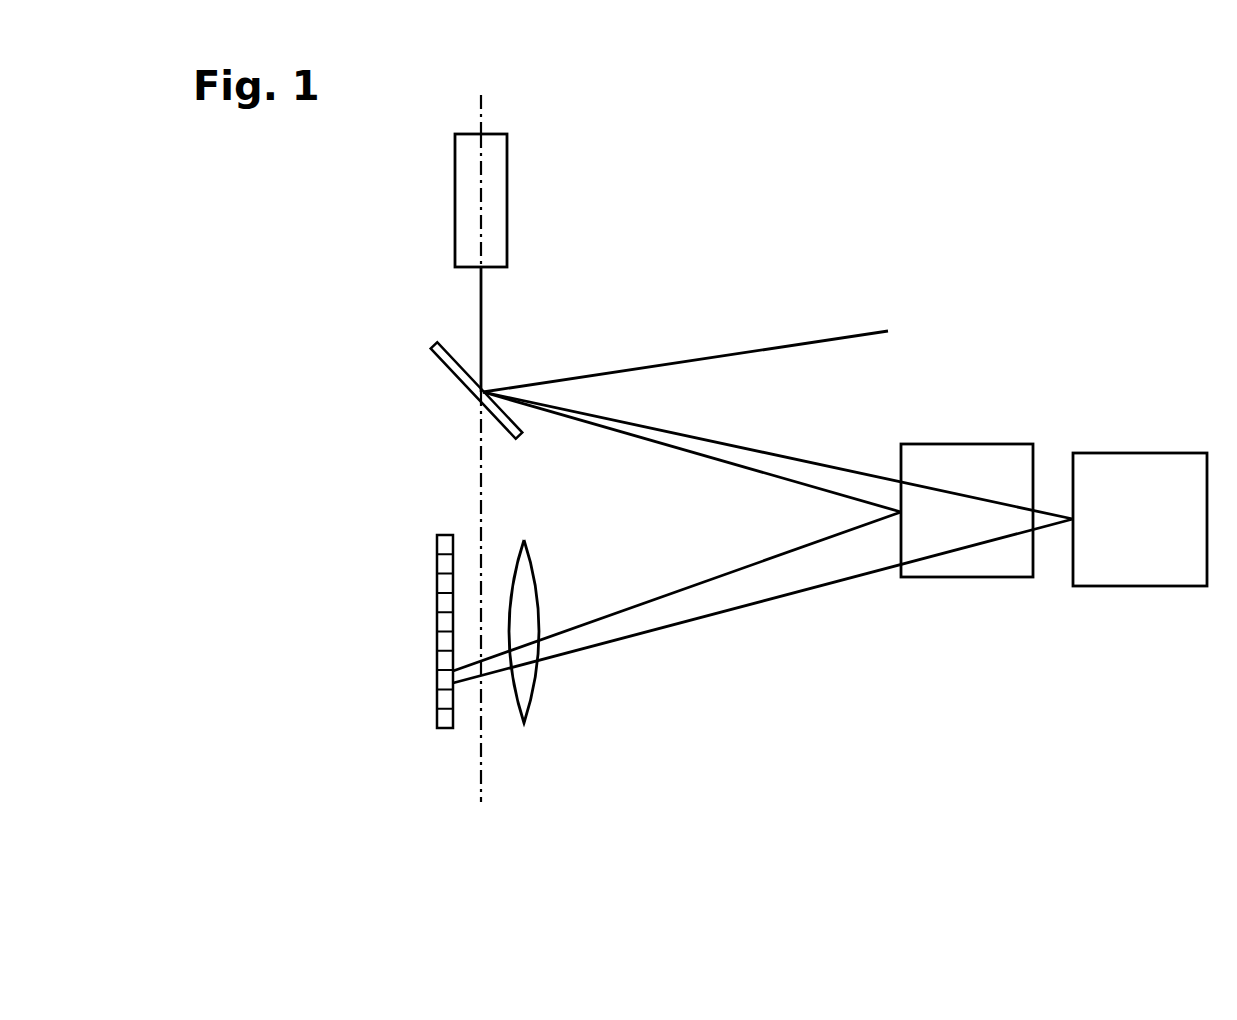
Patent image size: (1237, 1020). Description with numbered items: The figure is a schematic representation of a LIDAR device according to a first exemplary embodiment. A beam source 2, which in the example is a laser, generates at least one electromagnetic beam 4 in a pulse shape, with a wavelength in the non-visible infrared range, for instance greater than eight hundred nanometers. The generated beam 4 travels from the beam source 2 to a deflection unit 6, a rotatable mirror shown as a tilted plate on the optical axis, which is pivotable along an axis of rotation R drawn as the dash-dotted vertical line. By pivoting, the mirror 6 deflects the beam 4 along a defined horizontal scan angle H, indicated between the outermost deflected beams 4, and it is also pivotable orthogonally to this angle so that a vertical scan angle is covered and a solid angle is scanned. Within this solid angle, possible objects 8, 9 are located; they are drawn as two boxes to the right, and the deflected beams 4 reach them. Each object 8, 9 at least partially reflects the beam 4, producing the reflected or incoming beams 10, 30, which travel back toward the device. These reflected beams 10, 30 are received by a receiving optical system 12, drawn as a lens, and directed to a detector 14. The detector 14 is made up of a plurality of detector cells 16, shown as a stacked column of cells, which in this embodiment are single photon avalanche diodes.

The beam source 2 is at (455, 197).
The electromagnetic beam 4 is at (481, 306).
The deflection unit 6 is at (460, 380).
The object 8 is at (967, 444).
The object 9 is at (1141, 453).
The reflected beam 10 is at (722, 575).
The receiving optical system 12 is at (538, 697).
The detector 14 is at (360, 736).
The detector cells 16 is at (437, 600).
The reflected beam 30 is at (802, 592).
The horizontal scan angle H is at (614, 373).
The axis of rotation R is at (480, 787).